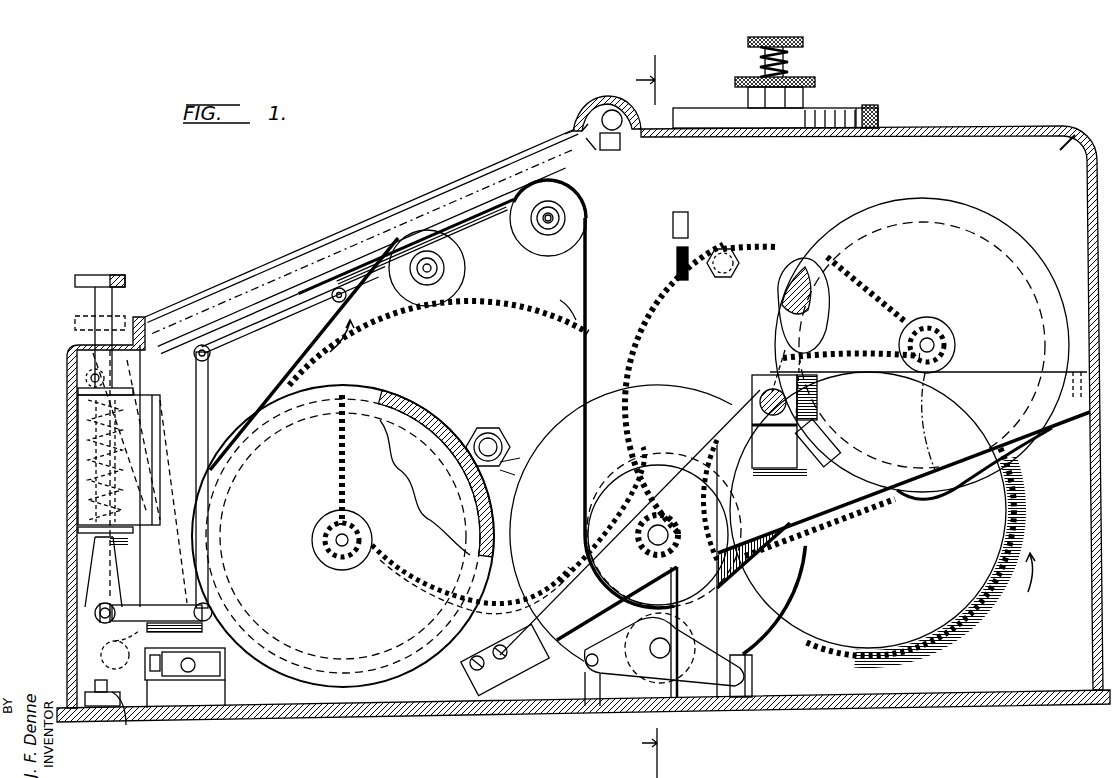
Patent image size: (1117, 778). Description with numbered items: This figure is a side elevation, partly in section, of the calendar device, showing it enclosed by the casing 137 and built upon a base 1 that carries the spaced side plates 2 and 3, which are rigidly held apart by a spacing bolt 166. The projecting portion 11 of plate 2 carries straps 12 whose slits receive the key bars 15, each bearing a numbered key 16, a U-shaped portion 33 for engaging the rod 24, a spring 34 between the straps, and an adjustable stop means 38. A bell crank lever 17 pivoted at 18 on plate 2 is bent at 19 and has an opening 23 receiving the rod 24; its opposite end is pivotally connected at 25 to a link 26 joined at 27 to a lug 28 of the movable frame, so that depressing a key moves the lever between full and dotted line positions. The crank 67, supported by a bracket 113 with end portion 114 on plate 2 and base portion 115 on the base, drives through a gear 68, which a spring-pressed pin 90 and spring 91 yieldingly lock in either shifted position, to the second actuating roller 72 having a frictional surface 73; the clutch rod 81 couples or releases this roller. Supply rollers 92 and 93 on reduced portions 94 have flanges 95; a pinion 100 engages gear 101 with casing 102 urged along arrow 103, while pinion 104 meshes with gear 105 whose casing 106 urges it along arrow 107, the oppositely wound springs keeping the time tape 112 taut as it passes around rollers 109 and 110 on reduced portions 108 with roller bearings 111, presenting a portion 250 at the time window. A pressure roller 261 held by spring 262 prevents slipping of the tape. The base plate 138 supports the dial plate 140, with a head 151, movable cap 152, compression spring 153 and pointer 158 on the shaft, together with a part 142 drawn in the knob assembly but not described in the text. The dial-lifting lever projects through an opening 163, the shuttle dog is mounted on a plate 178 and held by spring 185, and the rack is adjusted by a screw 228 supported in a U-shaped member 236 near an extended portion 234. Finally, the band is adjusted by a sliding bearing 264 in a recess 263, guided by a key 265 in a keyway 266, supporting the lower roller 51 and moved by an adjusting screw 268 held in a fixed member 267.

The base 1 is at (218, 718).
The side plate 2 is at (1062, 150).
The side plate 3 is at (647, 407).
The projecting portion 11 is at (90, 444).
The strap 12 is at (78, 392).
The key bar 15 is at (100, 551).
The key 16 is at (112, 275).
The bell crank lever 17 is at (196, 466).
The pivot 18 is at (212, 604).
The bend 19 is at (176, 605).
The opening 23 is at (95, 614).
The rod 24 is at (100, 622).
The pivotal connection 25 is at (212, 358).
The link 26 is at (205, 368).
The connection 27 is at (350, 300).
The lug 28 is at (310, 268).
The U-shaped portion 33 is at (100, 657).
The spring 34 is at (90, 470).
The adjustable stop means 38 is at (126, 725).
The lower roller 51 is at (200, 662).
The crank 67 is at (770, 390).
The gear 68 is at (662, 305).
The second actuating roller 72 is at (590, 525).
The frictional surface 73 is at (610, 463).
The clutch rod 81 is at (677, 258).
The spring-pressed pin 90 is at (798, 394).
The spring 91 is at (840, 436).
The supply roller 92 is at (936, 222).
The supply roller 93 is at (337, 405).
The reduced extended portion 94 is at (936, 344).
The flange 95 is at (1010, 216).
The pinion 100 is at (927, 330).
The gear 101 is at (1012, 522).
The casing 102 is at (1006, 497).
The arrow 103 is at (903, 502).
The pinion 104 is at (338, 556).
The gear 105 is at (528, 300).
The casing 106 is at (557, 300).
The arrow 107 is at (338, 336).
The reduced extended portion 108 is at (566, 216).
The roller 109 is at (560, 206).
The roller 110 is at (432, 268).
The roller bearings 111 is at (556, 220).
The time tape 112 is at (588, 306).
The bracket 113 is at (1005, 372).
The end portion 114 is at (456, 600).
The base portion 115 is at (702, 694).
The casing 137 is at (985, 126).
The base plate 138 is at (880, 120).
The dial plate 140 is at (872, 108).
The cap 142 is at (800, 80).
The head 151 is at (803, 42).
The movable cap 152 is at (803, 96).
The compression spring 153 is at (790, 60).
The pointer 158 is at (866, 108).
The opening 163 is at (688, 225).
The spacing bolt 166 is at (726, 250).
The plate 178 is at (598, 152).
The spring 185 is at (572, 133).
The screw 228 is at (610, 108).
The extended portion 234 is at (614, 110).
The U-shaped member 236 is at (621, 140).
The tape portion 250 is at (467, 210).
The pressure roller 261 is at (640, 628).
The spring 262 is at (752, 664).
The recess 263 is at (262, 636).
The sliding bearing 264 is at (206, 680).
The key 265 is at (183, 635).
The keyway 266 is at (268, 590).
The fixed member 267 is at (160, 672).
The adjusting screw 268 is at (150, 708).